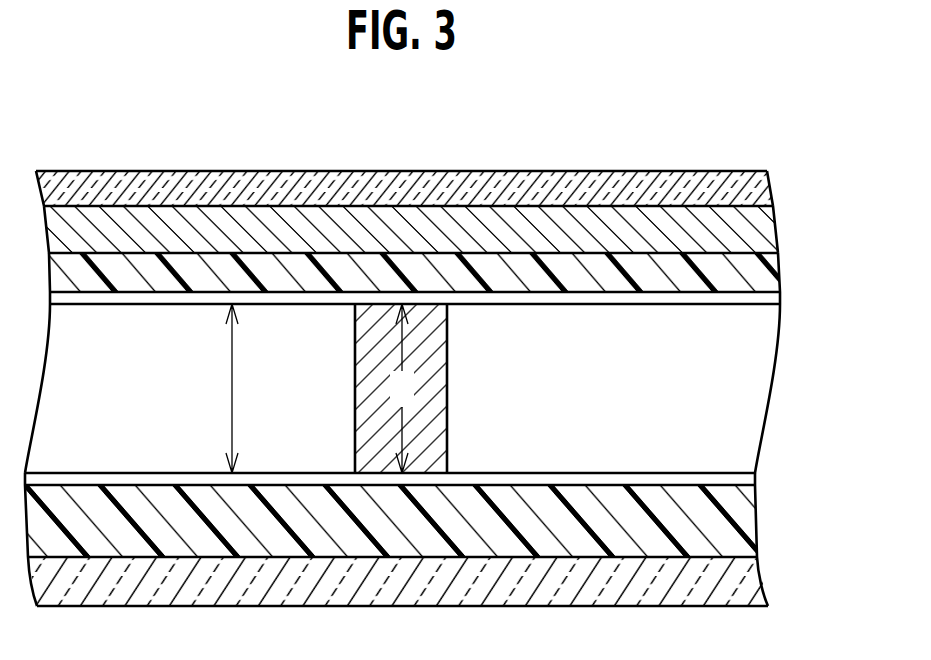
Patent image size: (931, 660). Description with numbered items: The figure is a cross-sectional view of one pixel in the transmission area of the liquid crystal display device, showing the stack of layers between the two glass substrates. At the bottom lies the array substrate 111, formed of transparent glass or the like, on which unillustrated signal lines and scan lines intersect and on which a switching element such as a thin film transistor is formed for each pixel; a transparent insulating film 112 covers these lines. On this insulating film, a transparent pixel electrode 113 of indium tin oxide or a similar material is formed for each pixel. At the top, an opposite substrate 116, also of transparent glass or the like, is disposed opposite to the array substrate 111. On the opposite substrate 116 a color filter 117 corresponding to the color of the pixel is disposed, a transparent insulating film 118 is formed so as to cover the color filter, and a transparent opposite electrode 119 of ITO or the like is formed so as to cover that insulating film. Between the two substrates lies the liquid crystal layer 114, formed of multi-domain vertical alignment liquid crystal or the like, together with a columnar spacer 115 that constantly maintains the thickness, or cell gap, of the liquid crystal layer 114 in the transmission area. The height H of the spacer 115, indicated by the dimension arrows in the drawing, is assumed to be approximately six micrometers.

The array substrate 111 is at (748, 573).
The transparent insulating film 112 is at (735, 510).
The transparent pixel electrode 113 is at (737, 473).
The liquid crystal layer 114 is at (750, 388).
The columnar spacer 115 is at (447, 430).
The opposite substrate 116 is at (752, 183).
The color filter 117 is at (757, 228).
The transparent insulating film 118 is at (773, 265).
The transparent opposite electrode 119 is at (762, 307).